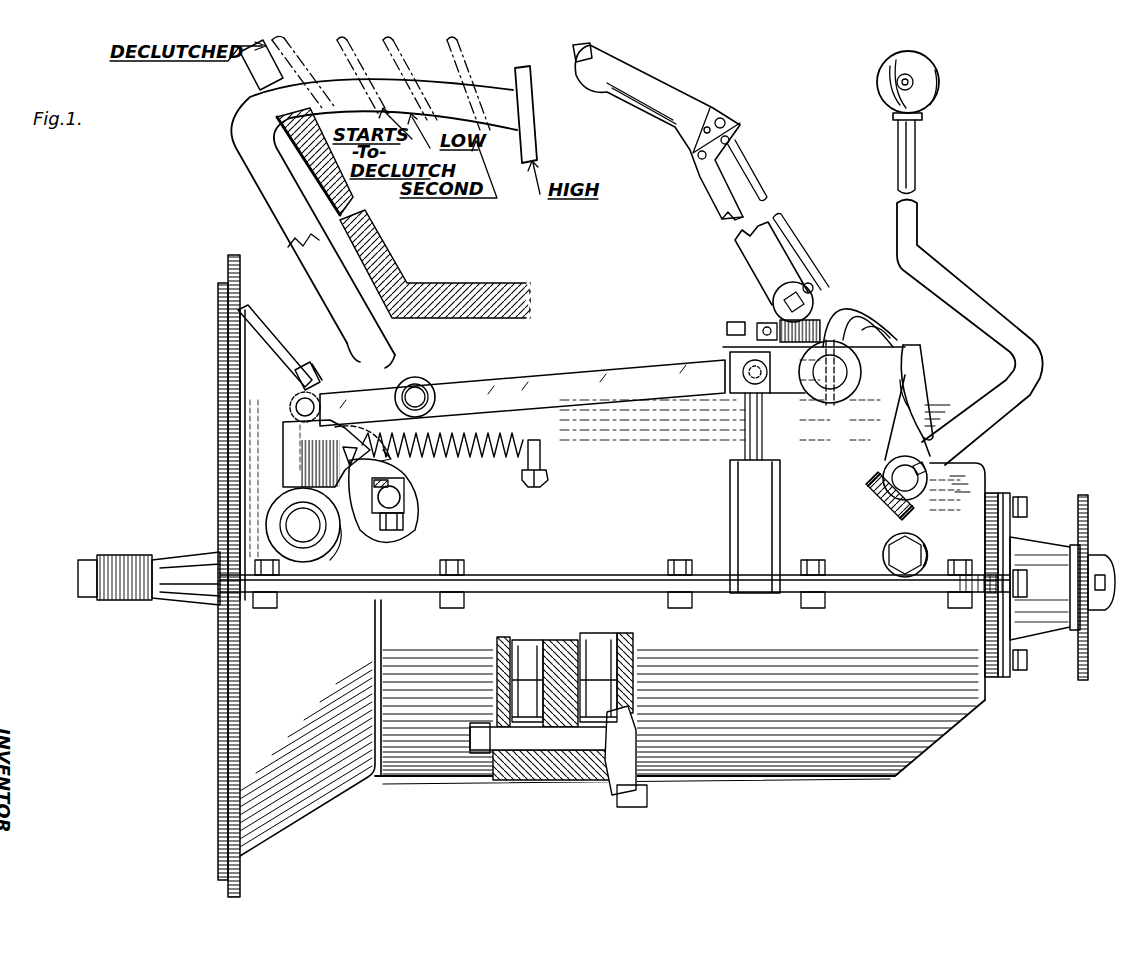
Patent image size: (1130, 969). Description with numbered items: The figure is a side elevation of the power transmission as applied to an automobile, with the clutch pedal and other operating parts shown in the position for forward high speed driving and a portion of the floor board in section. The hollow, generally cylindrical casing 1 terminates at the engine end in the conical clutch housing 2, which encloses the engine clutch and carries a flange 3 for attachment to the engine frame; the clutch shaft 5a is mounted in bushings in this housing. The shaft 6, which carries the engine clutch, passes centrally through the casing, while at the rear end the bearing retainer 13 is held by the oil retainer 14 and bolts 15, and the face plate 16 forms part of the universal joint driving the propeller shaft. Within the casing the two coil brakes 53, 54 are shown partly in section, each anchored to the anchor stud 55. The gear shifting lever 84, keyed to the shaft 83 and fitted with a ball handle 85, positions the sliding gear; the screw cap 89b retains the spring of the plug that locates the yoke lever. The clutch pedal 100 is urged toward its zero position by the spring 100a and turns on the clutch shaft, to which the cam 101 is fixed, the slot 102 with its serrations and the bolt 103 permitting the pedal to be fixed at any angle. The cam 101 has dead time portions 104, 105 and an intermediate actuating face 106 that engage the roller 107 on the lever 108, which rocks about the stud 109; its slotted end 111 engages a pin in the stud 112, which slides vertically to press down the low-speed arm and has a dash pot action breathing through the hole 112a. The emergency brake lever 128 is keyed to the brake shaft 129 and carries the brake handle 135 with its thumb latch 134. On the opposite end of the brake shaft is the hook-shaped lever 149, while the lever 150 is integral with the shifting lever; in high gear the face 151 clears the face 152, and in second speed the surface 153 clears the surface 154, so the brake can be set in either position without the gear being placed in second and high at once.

The casing 1 is at (680, 700).
The clutch housing 2 is at (309, 580).
The flange 3 is at (233, 882).
The clutch shaft 5a is at (297, 523).
The shaft 6 is at (197, 603).
The bearing retainer 13 is at (1003, 493).
The oil retainer 14 is at (1035, 545).
The bolts 15 is at (1020, 497).
The face plate 16 is at (1088, 510).
The coil brake 53 is at (530, 648).
The coil brake 54 is at (600, 645).
The anchor stud 55 is at (560, 742).
The shaft 83 is at (898, 470).
The gear shifting lever 84 is at (1040, 362).
The ball handle 85 is at (940, 82).
The screw cap 89b is at (889, 553).
The clutch pedal 100 is at (257, 177).
The spring 100a is at (507, 430).
The cam 101 is at (405, 473).
The slot 102 is at (403, 522).
The bolt 103 is at (400, 497).
The dead time portion 104 is at (300, 423).
The dead time portion 105 is at (352, 428).
The actuating face 106 is at (322, 362).
The roller 107 is at (290, 404).
The lever 108 is at (522, 393).
The stud 109 is at (418, 393).
The end of lever 111 is at (733, 360).
The stud 112 is at (742, 432).
The hole 112a is at (752, 480).
The emergency brake lever 128 is at (755, 278).
The brake shaft 129 is at (822, 385).
The thumb latch 134 is at (573, 55).
The brake handle 135 is at (650, 95).
The hook-shaped lever 149 is at (845, 300).
The lever 150 is at (921, 375).
The face 151 is at (858, 318).
The face 152 is at (921, 388).
The surface 153 is at (880, 327).
The surface 154 is at (922, 355).